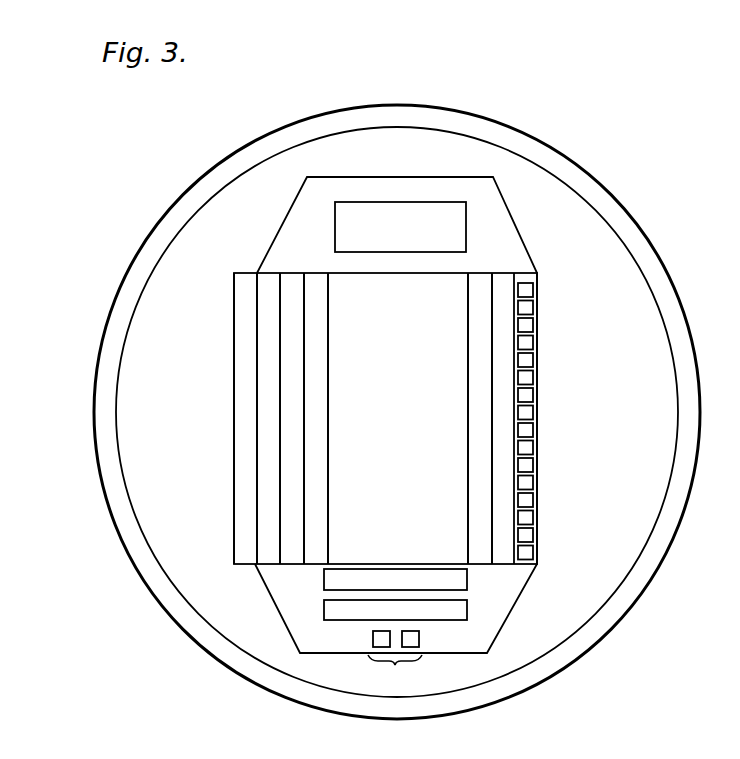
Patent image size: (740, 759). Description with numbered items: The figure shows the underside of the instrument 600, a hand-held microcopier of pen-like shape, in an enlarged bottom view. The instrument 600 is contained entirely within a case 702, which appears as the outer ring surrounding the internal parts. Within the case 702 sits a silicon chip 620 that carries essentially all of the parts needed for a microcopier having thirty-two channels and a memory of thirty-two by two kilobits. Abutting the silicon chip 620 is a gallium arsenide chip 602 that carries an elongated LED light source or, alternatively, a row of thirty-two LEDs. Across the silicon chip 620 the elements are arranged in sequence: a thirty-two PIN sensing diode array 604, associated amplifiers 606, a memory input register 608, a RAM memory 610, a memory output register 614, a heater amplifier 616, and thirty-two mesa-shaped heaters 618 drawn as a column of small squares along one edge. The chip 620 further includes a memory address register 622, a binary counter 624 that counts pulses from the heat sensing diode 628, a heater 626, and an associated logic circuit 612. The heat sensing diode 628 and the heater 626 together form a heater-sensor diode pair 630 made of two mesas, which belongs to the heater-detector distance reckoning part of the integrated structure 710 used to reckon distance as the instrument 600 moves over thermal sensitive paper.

The instrument 600 is at (95, 515).
The gallium arsenide chip 602 is at (238, 362).
The sensing diode array 604 is at (268, 298).
The amplifiers 606 is at (298, 287).
The memory input register 608 is at (322, 298).
The RAM memory 610 is at (381, 399).
The logic circuit 612 is at (386, 239).
The memory output register 614 is at (477, 343).
The heater amplifier 616 is at (498, 418).
The mesa-shaped heaters 618 is at (527, 358).
The silicon chip 620 is at (502, 610).
The memory address register 622 is at (327, 571).
The binary counter 624 is at (347, 612).
The heater 626 is at (420, 639).
The heat sensing diode 628 is at (374, 644).
The heater-sensor diode pair 630 is at (395, 670).
The case 702 is at (110, 370).
The integrated structure 710 is at (206, 442).